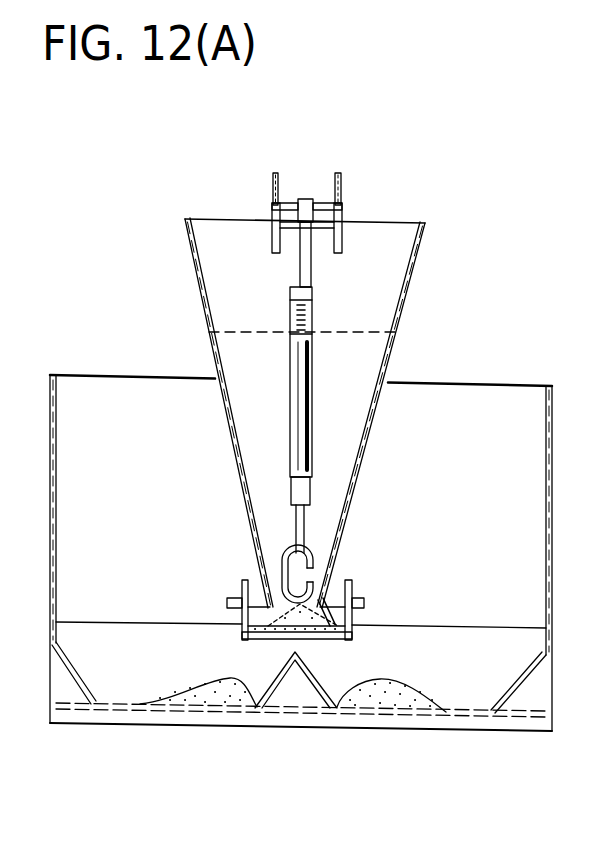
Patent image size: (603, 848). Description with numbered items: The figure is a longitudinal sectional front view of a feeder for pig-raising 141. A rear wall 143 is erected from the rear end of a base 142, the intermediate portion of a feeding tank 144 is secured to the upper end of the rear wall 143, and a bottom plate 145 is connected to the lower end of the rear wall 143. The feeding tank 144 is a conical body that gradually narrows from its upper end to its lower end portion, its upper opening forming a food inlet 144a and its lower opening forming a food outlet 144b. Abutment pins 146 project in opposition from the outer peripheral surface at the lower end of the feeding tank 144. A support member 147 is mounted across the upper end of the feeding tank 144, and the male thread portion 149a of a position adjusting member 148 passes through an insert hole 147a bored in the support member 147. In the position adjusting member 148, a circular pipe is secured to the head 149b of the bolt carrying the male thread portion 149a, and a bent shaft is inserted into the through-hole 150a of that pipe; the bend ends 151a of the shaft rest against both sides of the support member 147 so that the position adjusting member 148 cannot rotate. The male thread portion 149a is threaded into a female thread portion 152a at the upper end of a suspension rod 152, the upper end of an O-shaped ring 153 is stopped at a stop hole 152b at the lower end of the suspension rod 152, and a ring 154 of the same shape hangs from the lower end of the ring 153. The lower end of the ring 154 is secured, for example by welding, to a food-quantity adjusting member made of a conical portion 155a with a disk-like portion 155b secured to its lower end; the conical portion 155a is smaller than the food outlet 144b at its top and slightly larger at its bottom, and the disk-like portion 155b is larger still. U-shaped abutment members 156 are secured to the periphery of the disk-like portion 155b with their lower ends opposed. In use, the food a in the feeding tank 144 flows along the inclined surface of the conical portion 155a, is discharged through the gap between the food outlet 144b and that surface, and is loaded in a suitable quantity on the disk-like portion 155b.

The feeder for pig-raising 141 is at (462, 166).
The base 142 is at (292, 718).
The rear wall 143 is at (497, 390).
The feeding tank 144 is at (190, 258).
The food inlet 144a is at (210, 218).
The food outlet 144b is at (345, 625).
The bottom plate 145 is at (118, 687).
The abutment pin 146 is at (243, 598).
The support member 147 is at (272, 250).
The insert hole 147a is at (330, 268).
The position adjusting member 148 is at (310, 167).
The male thread portion 149a is at (300, 262).
The head of bolt 149b is at (302, 200).
The through-hole 150a is at (340, 205).
The bend end 151a is at (272, 242).
The suspension rod 152 is at (291, 397).
The female thread portion 152a is at (315, 313).
The stop hole 152b is at (290, 490).
The O-shaped ring 153 is at (312, 515).
The ring 154 is at (282, 563).
The conical portion 155a is at (243, 622).
The disk-like portion 155b is at (283, 637).
The U-shaped abutment member 156 is at (245, 580).
The food a is at (165, 690).